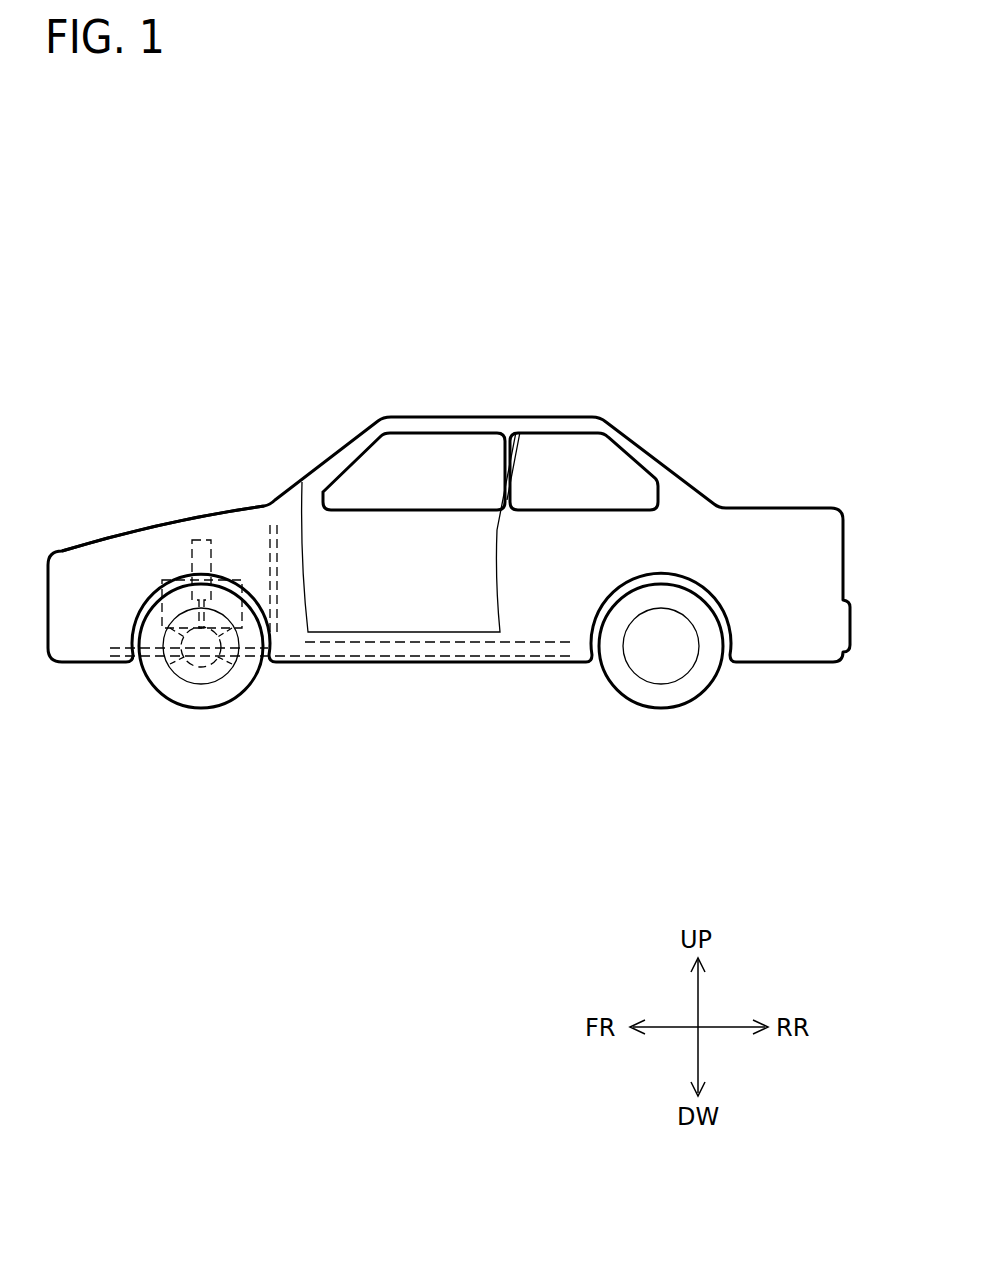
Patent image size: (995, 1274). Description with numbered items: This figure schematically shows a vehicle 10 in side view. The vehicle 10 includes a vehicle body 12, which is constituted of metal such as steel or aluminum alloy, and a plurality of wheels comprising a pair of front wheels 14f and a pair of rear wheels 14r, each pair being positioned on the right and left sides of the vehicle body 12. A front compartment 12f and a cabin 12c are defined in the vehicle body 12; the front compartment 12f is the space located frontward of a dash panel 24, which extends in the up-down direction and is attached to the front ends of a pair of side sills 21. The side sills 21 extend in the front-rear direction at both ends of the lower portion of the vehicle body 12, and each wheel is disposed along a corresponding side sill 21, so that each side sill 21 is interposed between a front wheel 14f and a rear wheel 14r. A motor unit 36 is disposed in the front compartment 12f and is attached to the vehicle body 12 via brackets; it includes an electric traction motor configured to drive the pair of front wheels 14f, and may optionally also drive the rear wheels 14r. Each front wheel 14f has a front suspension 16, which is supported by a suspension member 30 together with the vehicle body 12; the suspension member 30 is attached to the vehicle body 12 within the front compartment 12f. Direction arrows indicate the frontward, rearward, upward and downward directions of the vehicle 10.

The vehicle 10 is at (449, 536).
The vehicle body 12 is at (449, 491).
The cabin 12c is at (475, 409).
The front compartment 12f is at (157, 523).
The front wheels 14f is at (176, 692).
The rear wheels 14r is at (688, 692).
The front suspension 16 is at (198, 540).
The side sill 21 is at (390, 665).
The dash panel 24 is at (270, 525).
The suspension member 30 is at (236, 652).
The motor unit 36 is at (162, 578).